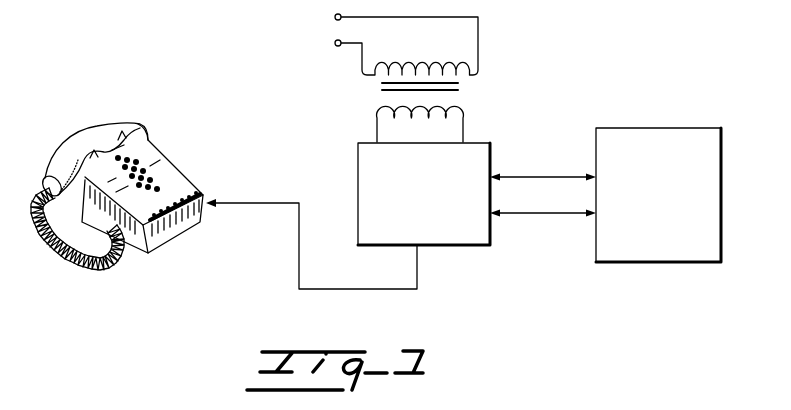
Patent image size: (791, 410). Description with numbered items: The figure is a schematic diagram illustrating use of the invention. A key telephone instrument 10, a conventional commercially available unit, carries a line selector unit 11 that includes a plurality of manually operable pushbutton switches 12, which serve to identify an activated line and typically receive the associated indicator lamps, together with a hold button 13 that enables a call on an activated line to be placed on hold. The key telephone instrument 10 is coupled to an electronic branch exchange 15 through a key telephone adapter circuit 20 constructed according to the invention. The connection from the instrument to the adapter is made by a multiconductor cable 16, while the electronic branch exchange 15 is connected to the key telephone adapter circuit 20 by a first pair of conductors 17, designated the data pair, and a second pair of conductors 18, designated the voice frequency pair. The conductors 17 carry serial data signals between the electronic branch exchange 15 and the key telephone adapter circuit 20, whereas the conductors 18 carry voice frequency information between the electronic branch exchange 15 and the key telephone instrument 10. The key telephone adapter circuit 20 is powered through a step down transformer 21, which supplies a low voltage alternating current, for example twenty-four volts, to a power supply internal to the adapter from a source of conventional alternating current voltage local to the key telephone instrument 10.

The key telephone instrument 10 is at (150, 130).
The line selector unit 11 is at (178, 253).
The pushbutton switches 12 is at (186, 202).
The hold button 13 is at (143, 226).
The electronic branch exchange 15 is at (663, 116).
The multiconductor cable 16 is at (282, 204).
The first pair of conductors 17 is at (550, 214).
The second pair of conductors 18 is at (532, 176).
The key telephone adapter circuit 20 is at (343, 161).
The step down transformer 21 is at (462, 90).